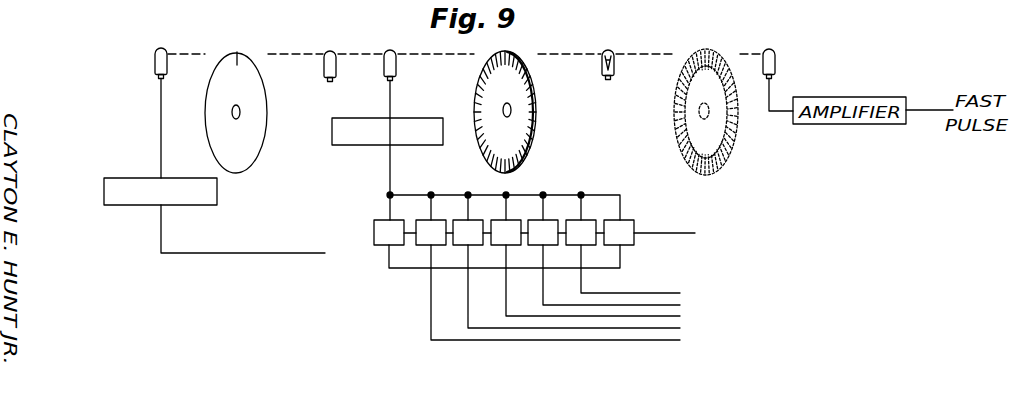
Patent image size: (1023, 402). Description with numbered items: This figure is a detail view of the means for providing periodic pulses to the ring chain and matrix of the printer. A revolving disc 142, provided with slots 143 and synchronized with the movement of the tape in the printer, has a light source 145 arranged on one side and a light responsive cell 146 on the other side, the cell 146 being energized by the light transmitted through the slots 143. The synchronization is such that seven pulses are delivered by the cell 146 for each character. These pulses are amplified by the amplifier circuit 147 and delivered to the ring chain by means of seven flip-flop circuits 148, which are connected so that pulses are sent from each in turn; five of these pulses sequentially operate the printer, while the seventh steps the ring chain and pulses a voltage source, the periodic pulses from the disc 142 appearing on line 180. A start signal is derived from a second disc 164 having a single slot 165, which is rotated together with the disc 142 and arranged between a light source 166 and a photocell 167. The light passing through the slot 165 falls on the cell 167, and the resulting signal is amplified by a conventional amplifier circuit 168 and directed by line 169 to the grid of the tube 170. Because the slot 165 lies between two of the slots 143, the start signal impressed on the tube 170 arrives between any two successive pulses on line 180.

The revolving disc 142 is at (523, 99).
The slots 143 is at (526, 140).
The light source 145 is at (610, 52).
The light responsive cell 146 is at (396, 60).
The amplifier circuit 147 is at (354, 145).
The flip-flop circuits 148 is at (376, 243).
The disc 164 is at (246, 155).
The slot 165 is at (237, 54).
The light source 166 is at (331, 53).
The photocell 167 is at (155, 54).
The amplifier circuit 168 is at (115, 178).
The line 169 is at (239, 240).
The tube 170 is at (158, 262).
The line 180 is at (656, 233).